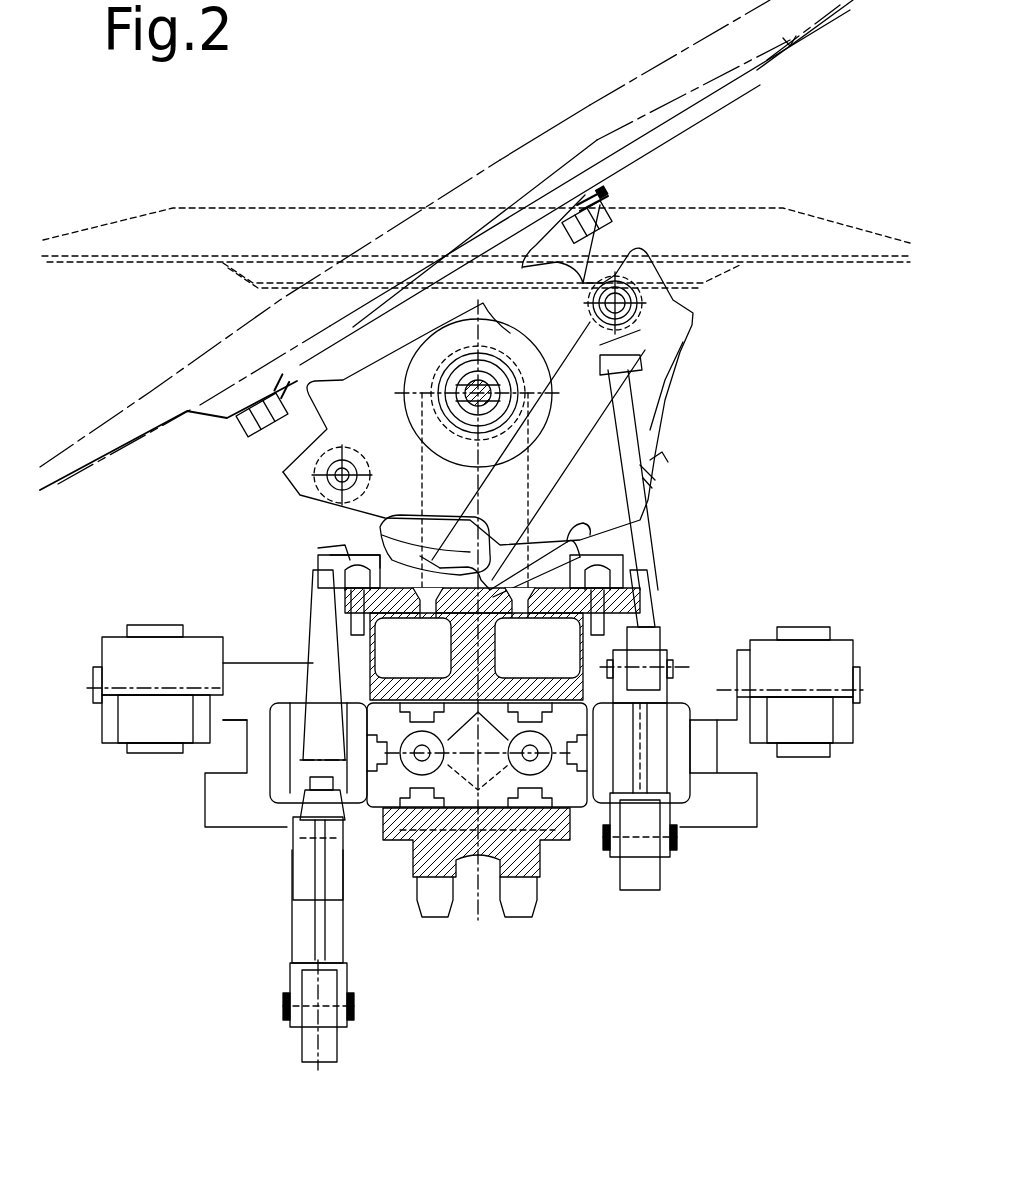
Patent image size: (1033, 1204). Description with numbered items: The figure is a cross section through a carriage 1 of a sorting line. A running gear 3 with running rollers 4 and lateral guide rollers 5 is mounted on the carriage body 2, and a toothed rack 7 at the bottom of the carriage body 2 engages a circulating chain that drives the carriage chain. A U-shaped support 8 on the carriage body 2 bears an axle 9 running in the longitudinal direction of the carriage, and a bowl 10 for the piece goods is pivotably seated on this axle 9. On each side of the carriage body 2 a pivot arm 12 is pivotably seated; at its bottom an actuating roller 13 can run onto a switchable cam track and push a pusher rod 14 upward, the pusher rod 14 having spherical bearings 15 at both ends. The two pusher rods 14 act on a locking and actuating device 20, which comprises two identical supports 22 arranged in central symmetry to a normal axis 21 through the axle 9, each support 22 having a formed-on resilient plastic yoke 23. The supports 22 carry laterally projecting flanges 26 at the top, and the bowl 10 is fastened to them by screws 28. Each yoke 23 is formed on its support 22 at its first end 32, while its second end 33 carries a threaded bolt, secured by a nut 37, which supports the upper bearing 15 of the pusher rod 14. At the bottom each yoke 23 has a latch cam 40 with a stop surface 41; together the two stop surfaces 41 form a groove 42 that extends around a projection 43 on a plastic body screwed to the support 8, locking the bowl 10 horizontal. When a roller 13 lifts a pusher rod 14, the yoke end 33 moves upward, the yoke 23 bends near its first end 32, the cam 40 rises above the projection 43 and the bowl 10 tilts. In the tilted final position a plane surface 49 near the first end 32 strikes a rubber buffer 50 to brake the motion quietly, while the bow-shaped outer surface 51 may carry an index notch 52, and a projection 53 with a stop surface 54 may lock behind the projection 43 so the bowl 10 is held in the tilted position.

The carriage 1 is at (850, 457).
The carriage body 2 is at (558, 780).
The running gear 3 is at (800, 770).
The running rollers 4 is at (803, 630).
The lateral guide rollers 5 is at (732, 817).
The toothed rack 7 is at (530, 867).
The U-shaped support 8 is at (410, 677).
The axle 9 is at (482, 380).
The bowl 10 is at (660, 125).
The pivot arm 12 is at (653, 762).
The actuating roller 13 is at (328, 1043).
The pusher rod 14 is at (643, 518).
The spherical bearings 15 is at (643, 667).
The locking and actuating device 20 is at (687, 362).
The normal axis 21 is at (425, 318).
The supports 22 is at (363, 420).
The resilient yokes 23 is at (653, 433).
The flanges 26 is at (597, 197).
The screws 28 is at (593, 222).
The first end 32 is at (317, 543).
The second end 33 is at (673, 370).
The nut 37 is at (300, 545).
The latch cam 40 is at (472, 578).
The stop surface 41 is at (567, 540).
The groove 42 is at (497, 545).
The projection 43 is at (402, 610).
The plane surface 49 is at (683, 342).
The rubber buffer 50 is at (620, 590).
The outer surface 51 is at (670, 407).
The index notch 52 is at (653, 470).
The projection 53 is at (650, 480).
The stop surface 54 is at (650, 460).